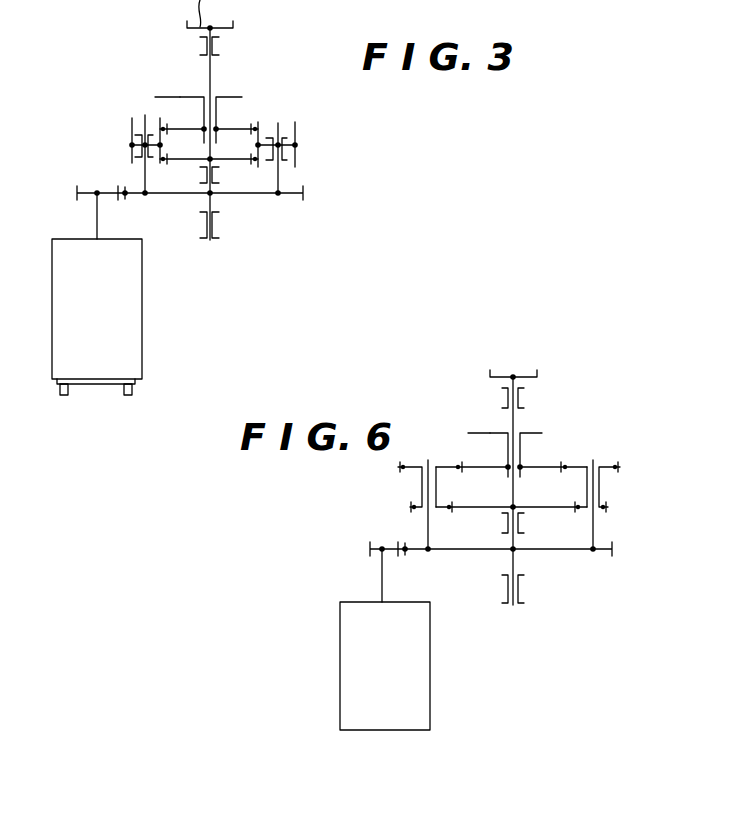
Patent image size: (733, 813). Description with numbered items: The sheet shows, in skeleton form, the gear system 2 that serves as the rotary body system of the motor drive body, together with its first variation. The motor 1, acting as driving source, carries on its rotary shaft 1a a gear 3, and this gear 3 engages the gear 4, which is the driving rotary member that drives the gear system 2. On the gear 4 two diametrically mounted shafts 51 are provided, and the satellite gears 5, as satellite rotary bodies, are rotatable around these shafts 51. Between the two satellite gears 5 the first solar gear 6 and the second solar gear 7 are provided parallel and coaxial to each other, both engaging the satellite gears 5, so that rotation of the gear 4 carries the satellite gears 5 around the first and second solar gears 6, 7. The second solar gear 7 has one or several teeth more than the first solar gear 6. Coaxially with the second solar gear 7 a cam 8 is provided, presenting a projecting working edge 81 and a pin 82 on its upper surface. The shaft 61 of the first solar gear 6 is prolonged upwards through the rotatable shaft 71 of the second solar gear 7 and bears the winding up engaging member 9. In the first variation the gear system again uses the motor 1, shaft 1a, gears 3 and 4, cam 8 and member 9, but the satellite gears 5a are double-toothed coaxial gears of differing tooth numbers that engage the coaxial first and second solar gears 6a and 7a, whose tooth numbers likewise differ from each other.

In FIG. 3, the motor 1 is at (77, 317).
In FIG. 6, the motor 1 is at (364, 666).
In FIG. 3, the rotary shaft 1a is at (58, 216).
In FIG. 6, the rotary shaft 1a is at (356, 575).
In FIG. 3, the gear system 2 is at (204, 120).
In FIG. 3, the gear 3 is at (104, 176).
In FIG. 6, the gear 3 is at (382, 533).
In FIG. 3, the gear 4 is at (222, 209).
In FIG. 6, the gear 4 is at (518, 570).
In FIG. 3, the satellite gears 5 is at (222, 144).
In FIG. 3, the shafts 51 is at (203, 140).
In FIG. 6, the shafts 51 is at (546, 504).
In FIG. 6, the satellite gears 5a is at (514, 487).
In FIG. 3, the first solar gear 6 is at (209, 173).
In FIG. 3, the shaft 61 is at (223, 120).
In FIG. 6, the first solar gear 6a is at (511, 491).
In FIG. 3, the second solar gear 7 is at (248, 107).
In FIG. 3, the rotatable shaft 71 is at (182, 116).
In FIG. 6, the second solar gear 7a is at (522, 445).
In FIG. 3, the cam 8 is at (254, 95).
In FIG. 6, the cam 8 is at (551, 432).
In FIG. 3, the projecting working edge 81 is at (153, 72).
In FIG. 6, the projecting working edge 81 is at (453, 421).
In FIG. 3, the pin 82 is at (183, 95).
In FIG. 6, the pin 82 is at (484, 429).
In FIG. 6, the winding up engaging member 9 is at (522, 355).